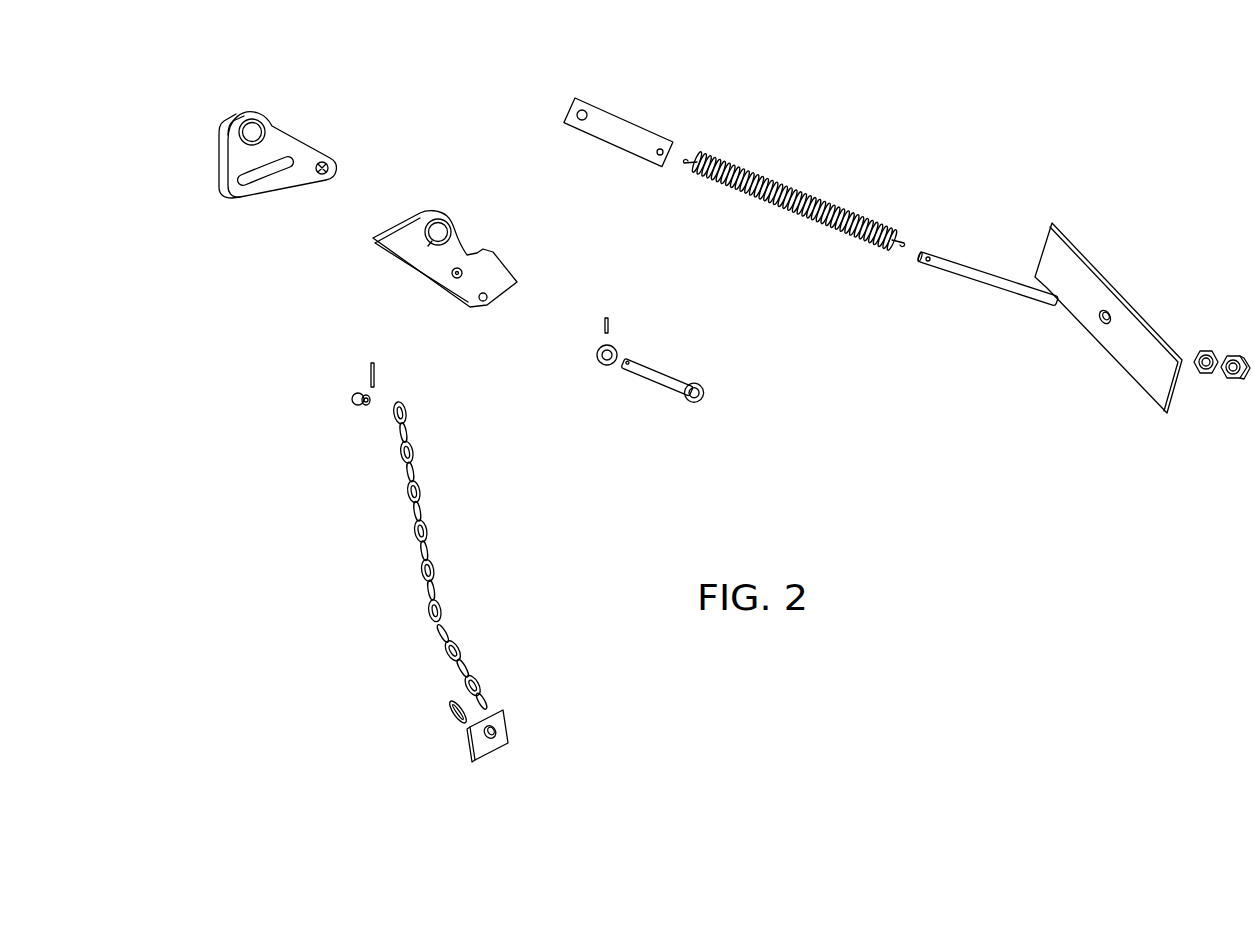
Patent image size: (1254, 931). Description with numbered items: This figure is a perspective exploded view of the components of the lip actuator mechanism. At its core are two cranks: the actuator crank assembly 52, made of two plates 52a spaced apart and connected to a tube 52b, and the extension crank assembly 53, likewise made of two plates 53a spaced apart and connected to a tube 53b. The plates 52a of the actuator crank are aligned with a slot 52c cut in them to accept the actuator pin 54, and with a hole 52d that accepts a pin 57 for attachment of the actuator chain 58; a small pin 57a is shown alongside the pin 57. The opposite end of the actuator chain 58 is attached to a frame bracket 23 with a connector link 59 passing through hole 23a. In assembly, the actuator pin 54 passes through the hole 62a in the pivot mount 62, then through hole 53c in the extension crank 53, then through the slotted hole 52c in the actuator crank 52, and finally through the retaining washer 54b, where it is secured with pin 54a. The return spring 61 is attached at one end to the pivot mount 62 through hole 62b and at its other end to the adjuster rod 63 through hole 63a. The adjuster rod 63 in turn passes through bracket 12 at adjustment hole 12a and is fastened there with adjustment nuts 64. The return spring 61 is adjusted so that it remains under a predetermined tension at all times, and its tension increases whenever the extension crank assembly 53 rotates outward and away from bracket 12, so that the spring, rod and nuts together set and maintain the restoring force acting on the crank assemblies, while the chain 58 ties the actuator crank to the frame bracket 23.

The bracket 12 is at (1108, 333).
The adjustment hole 12a is at (1103, 312).
The frame bracket 23 is at (533, 764).
The hole 23a is at (507, 714).
The actuator crank assembly 52 is at (285, 147).
The plates 52a is at (277, 150).
The tube 52b is at (219, 167).
The slot 52c is at (247, 182).
The hole 52d is at (327, 170).
The extension crank assembly 53 is at (425, 272).
The plates 53a is at (480, 282).
The tube 53b is at (452, 273).
The hole 53c is at (430, 242).
The actuator pin 54 is at (677, 382).
The pin 54a is at (607, 313).
The retaining washer 54b is at (600, 363).
The pin 57 is at (355, 403).
The cotter pin 57a is at (368, 379).
The actuator chain 58 is at (436, 563).
The chain link 59 is at (452, 720).
The return spring 61 is at (805, 193).
The pivot mount 62 is at (607, 96).
The hole 62a is at (582, 110).
The hole 62b is at (660, 149).
The adjuster rod 63 is at (987, 273).
The hole 63a is at (928, 264).
The adjustment nuts 64 is at (1202, 352).